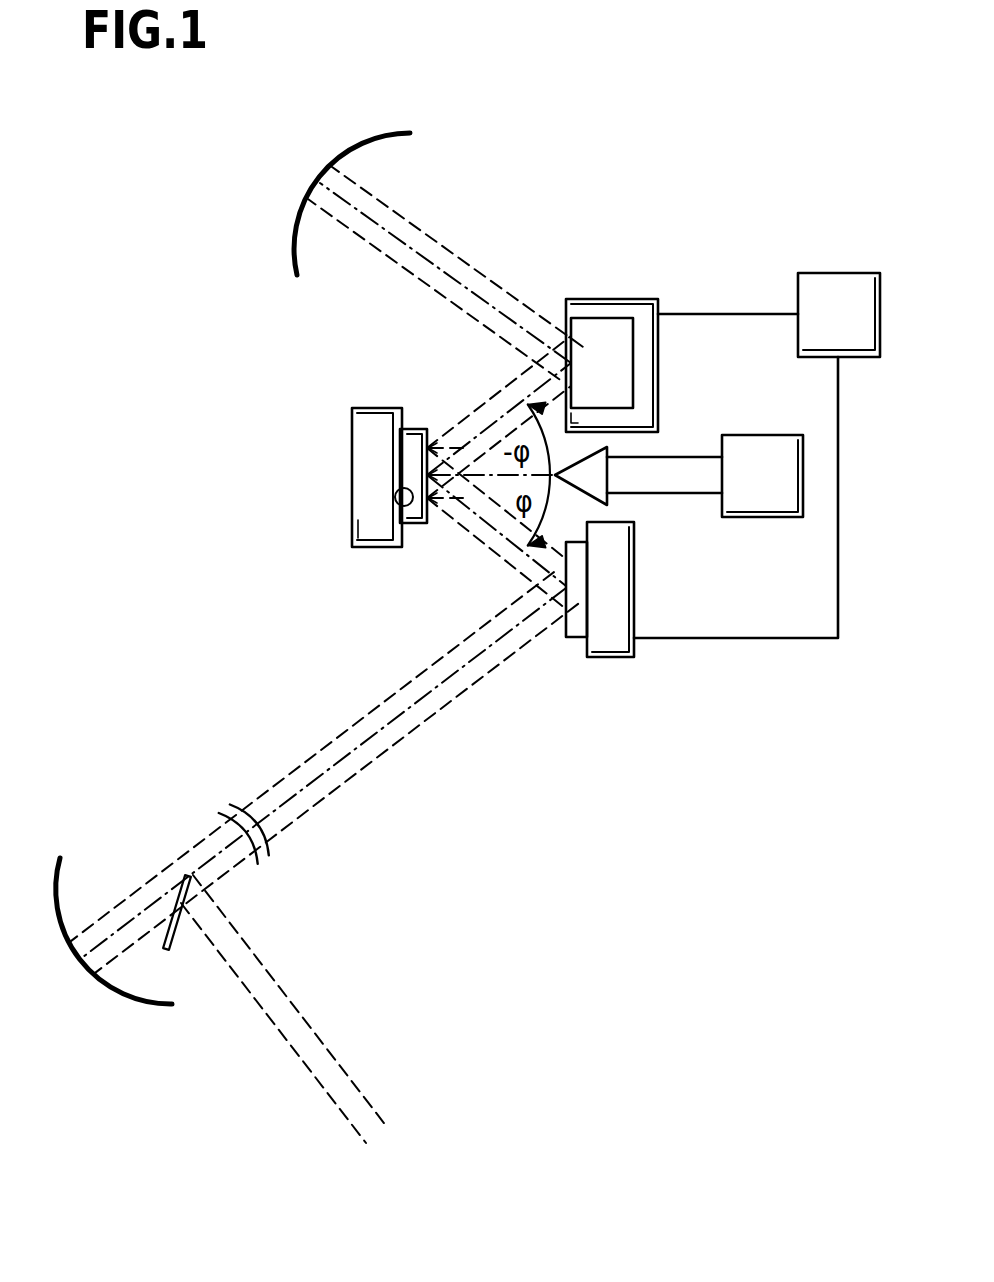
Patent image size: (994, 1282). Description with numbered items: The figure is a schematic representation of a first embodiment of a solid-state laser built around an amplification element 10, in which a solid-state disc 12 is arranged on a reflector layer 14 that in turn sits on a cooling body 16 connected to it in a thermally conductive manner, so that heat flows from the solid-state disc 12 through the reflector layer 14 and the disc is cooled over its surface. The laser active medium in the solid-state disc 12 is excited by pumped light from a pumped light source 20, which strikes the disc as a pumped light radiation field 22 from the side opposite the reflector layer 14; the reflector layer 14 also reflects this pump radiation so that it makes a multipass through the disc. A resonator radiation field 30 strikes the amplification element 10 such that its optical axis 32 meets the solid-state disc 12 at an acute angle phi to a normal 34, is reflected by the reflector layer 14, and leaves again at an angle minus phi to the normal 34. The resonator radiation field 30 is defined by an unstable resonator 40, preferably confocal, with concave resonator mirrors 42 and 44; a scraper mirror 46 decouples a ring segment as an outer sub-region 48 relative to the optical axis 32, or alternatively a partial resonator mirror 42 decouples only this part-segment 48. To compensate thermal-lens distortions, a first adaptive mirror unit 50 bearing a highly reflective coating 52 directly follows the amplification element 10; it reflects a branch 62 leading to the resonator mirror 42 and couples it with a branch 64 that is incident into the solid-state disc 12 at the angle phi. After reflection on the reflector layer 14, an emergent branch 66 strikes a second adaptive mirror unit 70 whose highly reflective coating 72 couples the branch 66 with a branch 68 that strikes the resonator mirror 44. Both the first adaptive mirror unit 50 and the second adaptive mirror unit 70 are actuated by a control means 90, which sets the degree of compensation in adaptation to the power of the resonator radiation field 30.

The amplification element 10 is at (330, 443).
The solid-state disc 12 is at (417, 437).
The reflector layer 14 is at (400, 512).
The cooling body 16 is at (373, 420).
The pumped light source 20 is at (755, 452).
The pumped light radiation field 22 is at (668, 485).
The resonator radiation field 30 is at (324, 710).
The optical axis 32 is at (390, 722).
The normal 34 is at (448, 418).
The unstable resonator 40 is at (445, 254).
The resonator mirror 42 is at (135, 1006).
The resonator mirror 44 is at (380, 133).
The scraper mirror 46 is at (183, 935).
The outer sub-region 48 is at (218, 873).
The first adaptive mirror unit 50 is at (586, 648).
The highly reflective coating 52 is at (551, 626).
The branch of the resonator radiation field 62 is at (300, 767).
The branch of the resonator radiation field 64 is at (507, 562).
The emergent branch 66 is at (522, 383).
The branch of the resonator radiation field 68 is at (457, 268).
The second adaptive mirror unit 70 is at (597, 317).
The highly reflective coating 72 is at (547, 333).
The control means 90 is at (830, 292).